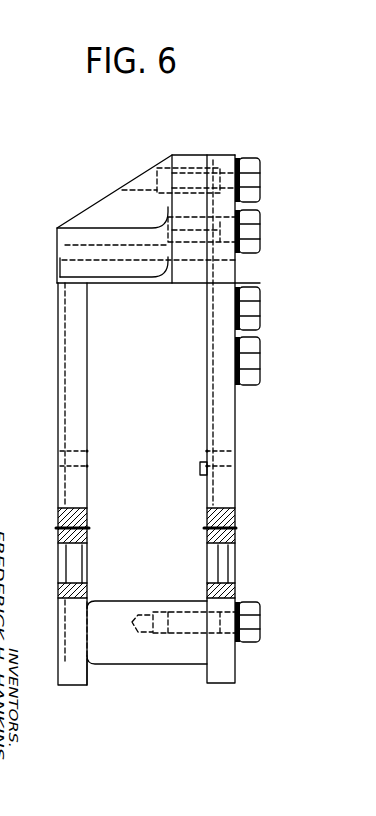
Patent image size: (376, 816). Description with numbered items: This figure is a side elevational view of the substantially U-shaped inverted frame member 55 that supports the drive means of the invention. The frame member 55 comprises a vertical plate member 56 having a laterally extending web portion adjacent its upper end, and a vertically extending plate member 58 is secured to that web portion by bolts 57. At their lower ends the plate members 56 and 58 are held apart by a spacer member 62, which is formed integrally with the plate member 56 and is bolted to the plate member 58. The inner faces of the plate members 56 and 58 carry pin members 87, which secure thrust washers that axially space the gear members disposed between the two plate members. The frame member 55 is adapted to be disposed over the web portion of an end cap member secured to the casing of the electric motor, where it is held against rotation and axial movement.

The substantially U-shaped inverted frame member 55 is at (90, 186).
The vertical plate member 56 is at (73, 413).
The bolts 57 is at (254, 230).
The vertically extending plate member 58 is at (225, 410).
The spacer member 62 is at (147, 657).
The pin members 87 is at (205, 467).